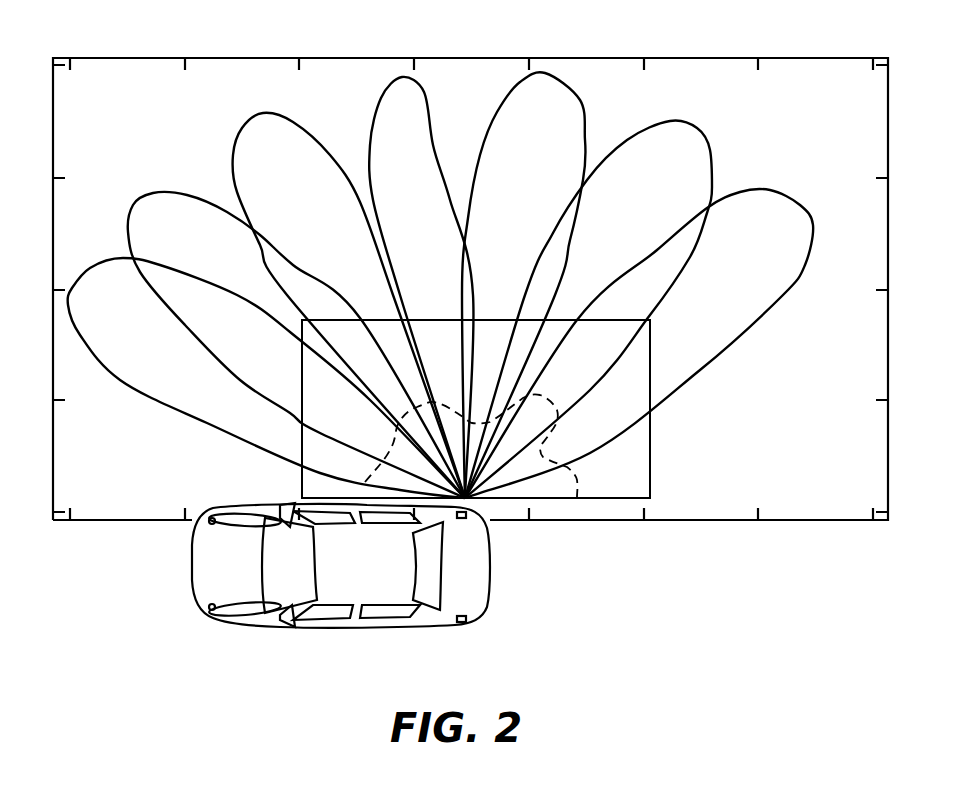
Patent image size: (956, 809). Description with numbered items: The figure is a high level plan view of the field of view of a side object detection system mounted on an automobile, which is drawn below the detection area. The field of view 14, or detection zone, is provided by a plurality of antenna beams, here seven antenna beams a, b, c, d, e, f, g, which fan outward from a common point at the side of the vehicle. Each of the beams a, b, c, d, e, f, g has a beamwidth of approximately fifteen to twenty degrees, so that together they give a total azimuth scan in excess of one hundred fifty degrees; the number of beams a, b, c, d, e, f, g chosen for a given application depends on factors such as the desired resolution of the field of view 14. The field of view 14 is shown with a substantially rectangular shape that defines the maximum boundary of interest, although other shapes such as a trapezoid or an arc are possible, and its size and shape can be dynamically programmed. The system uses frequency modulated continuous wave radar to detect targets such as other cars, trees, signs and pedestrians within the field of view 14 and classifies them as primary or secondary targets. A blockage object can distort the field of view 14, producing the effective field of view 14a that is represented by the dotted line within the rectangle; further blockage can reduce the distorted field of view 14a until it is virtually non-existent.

The antenna beam a is at (92, 262).
The antenna beam b is at (153, 193).
The antenna beam c is at (242, 133).
The antenna beam d is at (372, 102).
The antenna beam e is at (515, 90).
The antenna beam f is at (658, 122).
The antenna beam g is at (797, 192).
The field of view 14 is at (650, 430).
The effective field of view 14a is at (577, 483).